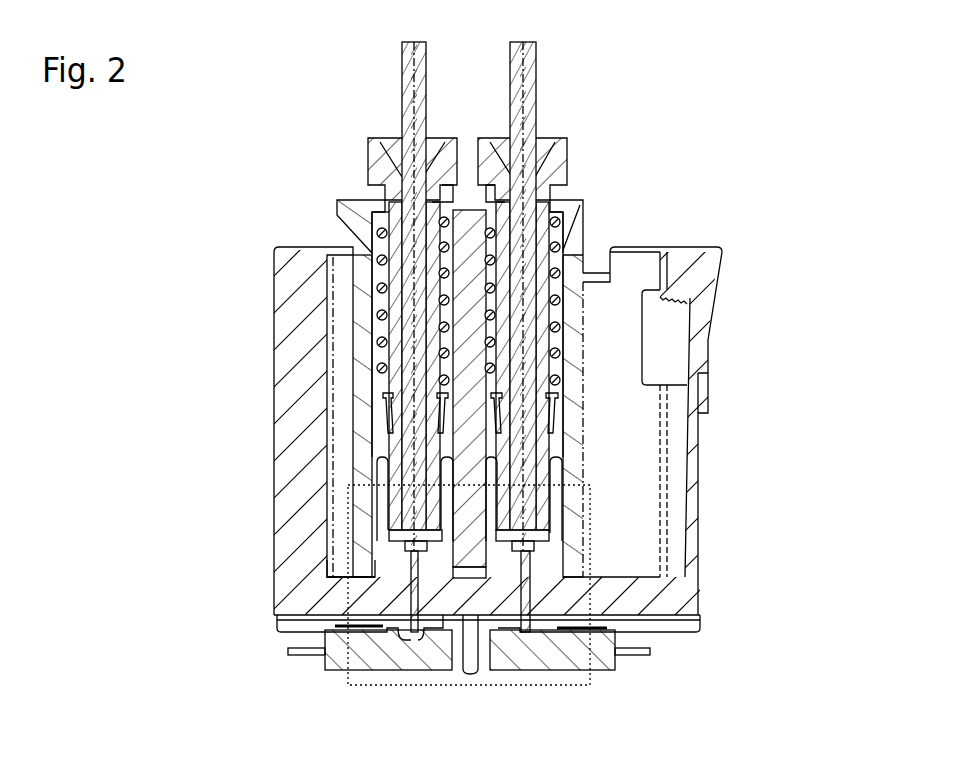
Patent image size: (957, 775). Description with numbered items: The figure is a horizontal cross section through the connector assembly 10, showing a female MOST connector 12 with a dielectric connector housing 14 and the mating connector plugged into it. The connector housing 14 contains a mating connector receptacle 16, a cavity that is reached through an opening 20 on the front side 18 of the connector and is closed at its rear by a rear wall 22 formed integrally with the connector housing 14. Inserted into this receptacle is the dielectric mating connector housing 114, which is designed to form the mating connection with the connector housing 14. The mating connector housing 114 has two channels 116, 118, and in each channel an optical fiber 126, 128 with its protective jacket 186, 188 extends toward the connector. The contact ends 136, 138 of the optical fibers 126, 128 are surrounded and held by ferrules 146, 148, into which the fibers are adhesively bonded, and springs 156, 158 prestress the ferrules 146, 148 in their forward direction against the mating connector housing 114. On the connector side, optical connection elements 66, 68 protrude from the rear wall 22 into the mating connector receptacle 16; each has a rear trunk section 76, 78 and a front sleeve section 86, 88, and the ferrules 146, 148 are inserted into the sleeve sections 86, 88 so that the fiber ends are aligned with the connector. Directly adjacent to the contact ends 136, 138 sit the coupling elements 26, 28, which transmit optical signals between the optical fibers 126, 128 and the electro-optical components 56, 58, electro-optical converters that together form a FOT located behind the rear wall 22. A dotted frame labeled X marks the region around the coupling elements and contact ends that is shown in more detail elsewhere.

The connector assembly 10 is at (686, 180).
The female MOST connector 12 is at (700, 473).
The connector housing 14 is at (690, 497).
The mating connector receptacle 16 is at (625, 310).
The front side 18 is at (297, 247).
The opening 20 is at (593, 267).
The rear wall 22 is at (615, 573).
The coupling element 26 is at (413, 598).
The coupling element 28 is at (528, 580).
The electro-optical component 56 is at (337, 672).
The electro-optical component 58 is at (605, 672).
The optical connection element 66 is at (380, 474).
The optical connection element 68 is at (560, 470).
The rear trunk section 76 is at (378, 567).
The rear trunk section 78 is at (545, 592).
The front sleeve section 86 is at (378, 508).
The front sleeve section 88 is at (560, 495).
The mating connector housing 114 is at (350, 200).
The channel 116 is at (445, 232).
The channel 118 is at (580, 207).
The optical fiber 126 is at (413, 80).
The optical fiber 128 is at (536, 80).
The contact end 136 is at (383, 538).
The contact end 138 is at (545, 534).
The ferrule 146 is at (385, 452).
The ferrule 148 is at (547, 437).
The spring 156 is at (383, 315).
The spring 158 is at (555, 325).
The protective jacket 186 is at (402, 52).
The protective jacket 188 is at (536, 48).
The detail region X is at (505, 685).